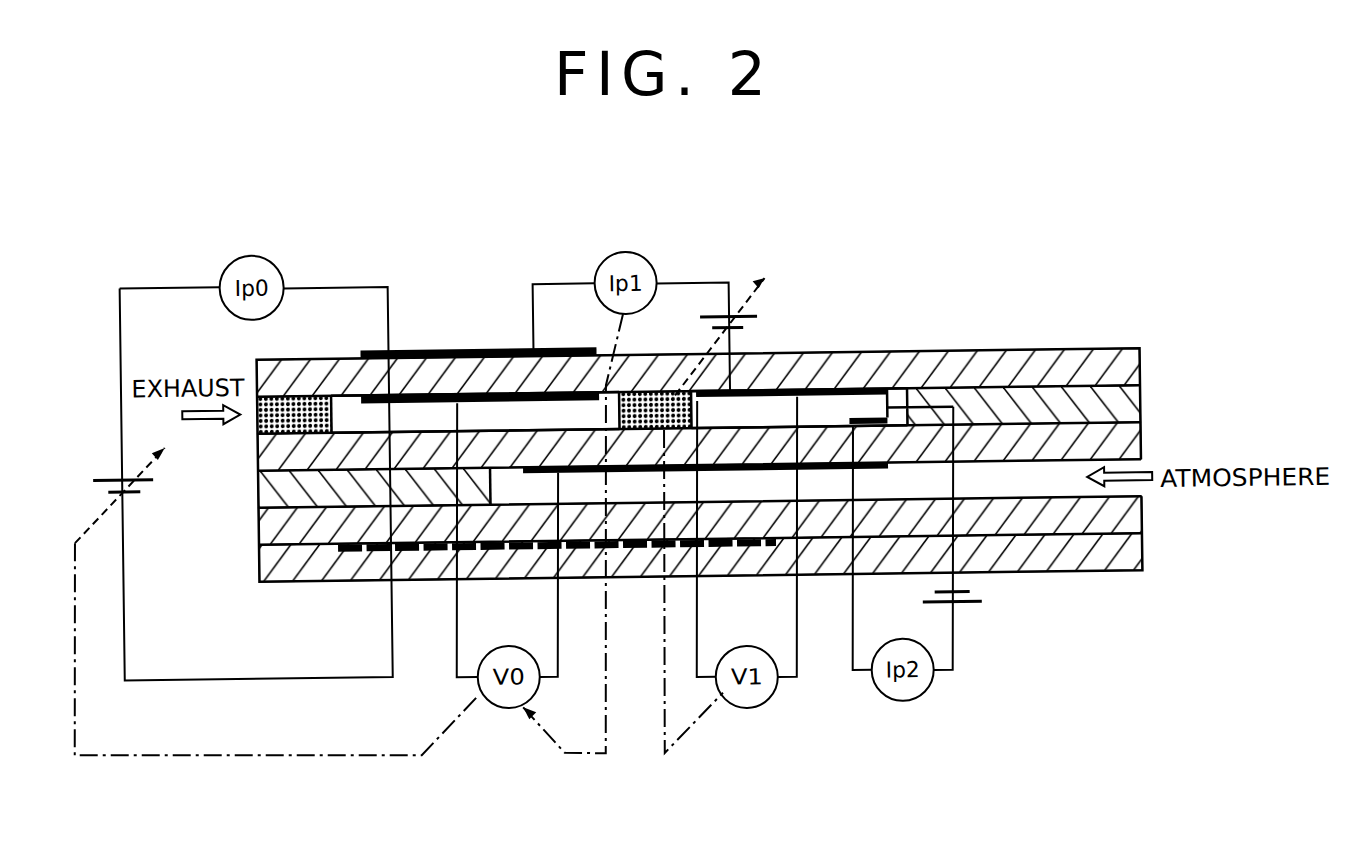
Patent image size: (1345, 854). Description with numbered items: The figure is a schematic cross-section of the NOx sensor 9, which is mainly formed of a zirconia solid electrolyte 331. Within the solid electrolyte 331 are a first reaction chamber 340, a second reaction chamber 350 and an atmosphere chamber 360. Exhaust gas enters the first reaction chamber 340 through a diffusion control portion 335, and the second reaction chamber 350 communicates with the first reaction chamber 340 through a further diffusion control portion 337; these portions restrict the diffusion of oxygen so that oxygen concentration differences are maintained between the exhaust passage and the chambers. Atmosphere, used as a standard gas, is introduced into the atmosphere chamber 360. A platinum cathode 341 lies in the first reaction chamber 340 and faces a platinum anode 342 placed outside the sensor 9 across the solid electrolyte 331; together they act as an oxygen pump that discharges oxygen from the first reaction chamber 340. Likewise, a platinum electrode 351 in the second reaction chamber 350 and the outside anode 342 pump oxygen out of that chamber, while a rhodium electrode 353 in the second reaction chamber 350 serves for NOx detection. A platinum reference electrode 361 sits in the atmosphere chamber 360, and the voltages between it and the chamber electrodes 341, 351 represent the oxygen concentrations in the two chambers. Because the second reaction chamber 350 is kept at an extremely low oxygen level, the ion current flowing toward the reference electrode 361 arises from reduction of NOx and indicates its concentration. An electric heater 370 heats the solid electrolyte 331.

The NOx sensor 9 is at (946, 280).
The solid electrolyte 331 is at (1141, 376).
The diffusion control portion 335 is at (288, 397).
The diffusion control portion 337 is at (661, 392).
The first reaction chamber 340 is at (516, 393).
The platinum electrode (cathode) 341 is at (369, 401).
The platinum electrode (anode) 342 is at (452, 345).
The second reaction chamber 350 is at (768, 411).
The platinum electrode 351 is at (859, 394).
The rhodium electrode 353 is at (904, 391).
The atmosphere chamber 360 is at (1000, 477).
The platinum electrode (reference electrode) 361 is at (817, 474).
The electric heater 370 is at (432, 544).